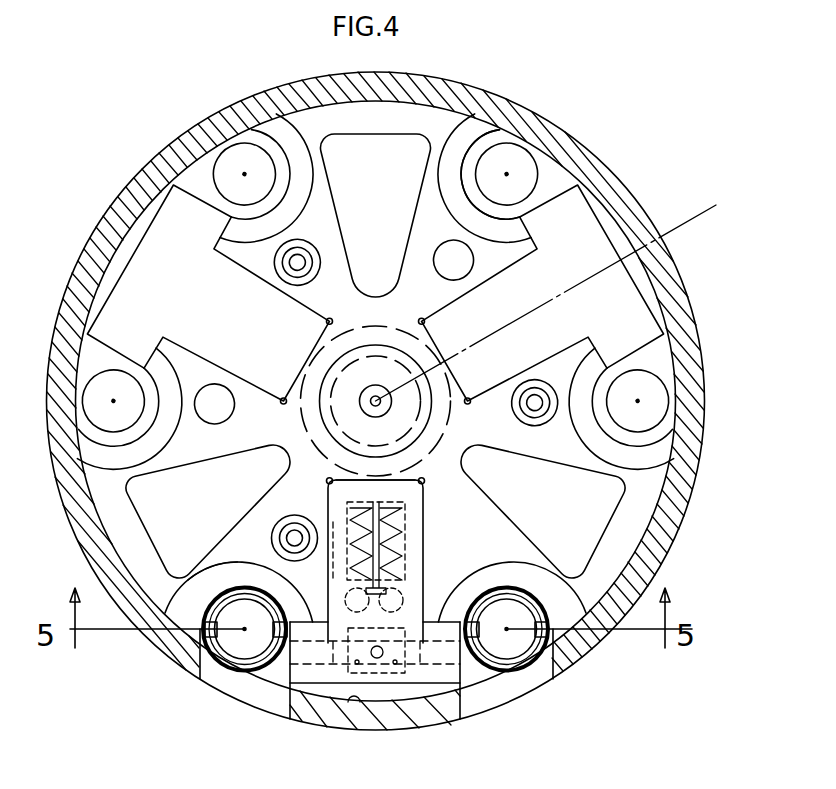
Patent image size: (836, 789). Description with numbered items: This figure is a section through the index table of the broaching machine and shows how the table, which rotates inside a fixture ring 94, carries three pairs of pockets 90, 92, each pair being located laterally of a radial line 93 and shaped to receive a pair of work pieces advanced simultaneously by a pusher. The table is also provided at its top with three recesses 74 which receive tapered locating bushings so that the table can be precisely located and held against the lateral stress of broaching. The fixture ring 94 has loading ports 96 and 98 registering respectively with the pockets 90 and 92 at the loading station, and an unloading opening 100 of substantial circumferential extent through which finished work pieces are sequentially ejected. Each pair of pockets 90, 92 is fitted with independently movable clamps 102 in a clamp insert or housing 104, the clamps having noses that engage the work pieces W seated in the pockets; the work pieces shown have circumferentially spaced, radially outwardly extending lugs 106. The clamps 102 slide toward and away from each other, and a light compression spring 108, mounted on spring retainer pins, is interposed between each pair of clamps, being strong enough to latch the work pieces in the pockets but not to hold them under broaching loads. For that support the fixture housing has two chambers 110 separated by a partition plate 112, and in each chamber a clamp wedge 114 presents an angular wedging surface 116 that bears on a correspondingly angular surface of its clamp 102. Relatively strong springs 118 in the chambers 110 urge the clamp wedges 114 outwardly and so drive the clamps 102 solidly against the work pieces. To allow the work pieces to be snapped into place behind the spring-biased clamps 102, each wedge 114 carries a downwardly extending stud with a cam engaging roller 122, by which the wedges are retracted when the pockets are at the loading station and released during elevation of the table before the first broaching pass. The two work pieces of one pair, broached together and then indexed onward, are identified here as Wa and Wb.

The recess 74 is at (280, 537).
The pocket 90 is at (676, 430).
The pocket 92 is at (566, 190).
The radial line 93 is at (712, 205).
The fixture ring 94 is at (362, 705).
The loading port 96 is at (287, 707).
The loading port 98 is at (542, 672).
The unloading opening 100 is at (132, 603).
The clamp 102 is at (277, 667).
The clamp insert or housing 104 is at (330, 480).
The lug 106 is at (207, 661).
The compression spring 108 is at (362, 661).
The chamber 110 is at (405, 533).
The partition plate 112 is at (403, 517).
The clamp wedge 114 is at (392, 622).
The angular wedging surface 116 is at (340, 632).
The spring 118 is at (358, 478).
The cam engaging roller 122 is at (333, 548).
The work piece W is at (217, 660).
The work piece Wa is at (228, 592).
The work piece Wb is at (555, 640).